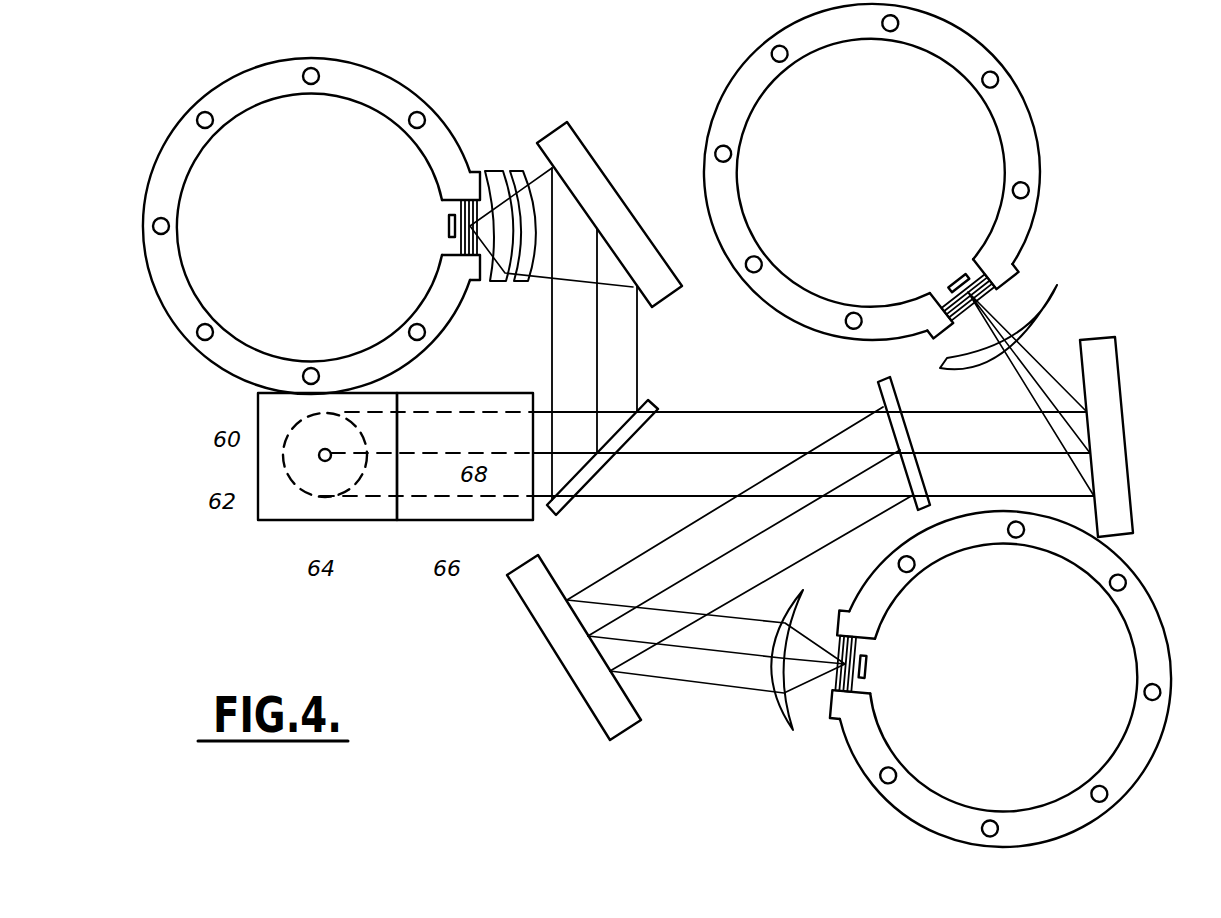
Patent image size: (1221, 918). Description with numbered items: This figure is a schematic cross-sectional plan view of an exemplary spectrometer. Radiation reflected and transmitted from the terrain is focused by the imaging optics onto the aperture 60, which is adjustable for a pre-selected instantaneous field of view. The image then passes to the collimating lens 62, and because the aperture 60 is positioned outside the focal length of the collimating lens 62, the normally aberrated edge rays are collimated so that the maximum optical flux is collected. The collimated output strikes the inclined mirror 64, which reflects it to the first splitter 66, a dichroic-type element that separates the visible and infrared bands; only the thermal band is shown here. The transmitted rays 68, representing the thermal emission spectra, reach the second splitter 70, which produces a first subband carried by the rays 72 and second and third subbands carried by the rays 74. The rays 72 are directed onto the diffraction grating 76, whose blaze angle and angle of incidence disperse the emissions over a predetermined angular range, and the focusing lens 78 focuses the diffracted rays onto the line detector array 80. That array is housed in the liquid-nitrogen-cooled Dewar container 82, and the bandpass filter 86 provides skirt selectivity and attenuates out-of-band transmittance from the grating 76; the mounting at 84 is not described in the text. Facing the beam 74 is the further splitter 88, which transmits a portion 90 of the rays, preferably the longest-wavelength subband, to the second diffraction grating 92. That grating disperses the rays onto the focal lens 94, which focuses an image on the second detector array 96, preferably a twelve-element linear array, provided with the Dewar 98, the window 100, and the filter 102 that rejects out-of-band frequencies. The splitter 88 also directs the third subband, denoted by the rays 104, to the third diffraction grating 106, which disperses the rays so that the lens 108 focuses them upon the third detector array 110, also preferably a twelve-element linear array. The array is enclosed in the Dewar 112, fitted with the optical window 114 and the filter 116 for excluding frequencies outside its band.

The aperture 60 is at (319, 455).
The collimating lens 62 is at (300, 486).
The mirror 64 is at (330, 521).
The first splitter 66 is at (455, 521).
The transmitted rays 68 is at (500, 455).
The second splitter 70 is at (655, 400).
The rays 72 is at (598, 382).
The rays 74 is at (745, 452).
The diffraction grating 76 is at (603, 172).
The focusing lens 78 is at (512, 170).
The line detector array 80 is at (450, 229).
The Dewar container 82 is at (310, 93).
The detector mount 84 is at (481, 282).
The bandpass filter 86 is at (460, 206).
The further splitter 88 is at (878, 390).
The transmitted portion 90 is at (963, 452).
The second diffraction grating 92 is at (1118, 368).
The focal lens 94 is at (1055, 298).
The second detector array 96 is at (960, 274).
The Dewar 98 is at (872, 40).
The window 100 is at (1018, 282).
The filter 102 is at (952, 290).
The rays 104 is at (683, 530).
The third diffraction grating 106 is at (592, 712).
The lens 108 is at (789, 727).
The third detector array 110 is at (870, 662).
The Dewar 112 is at (1000, 548).
The optical window 114 is at (840, 640).
The filter 116 is at (870, 688).